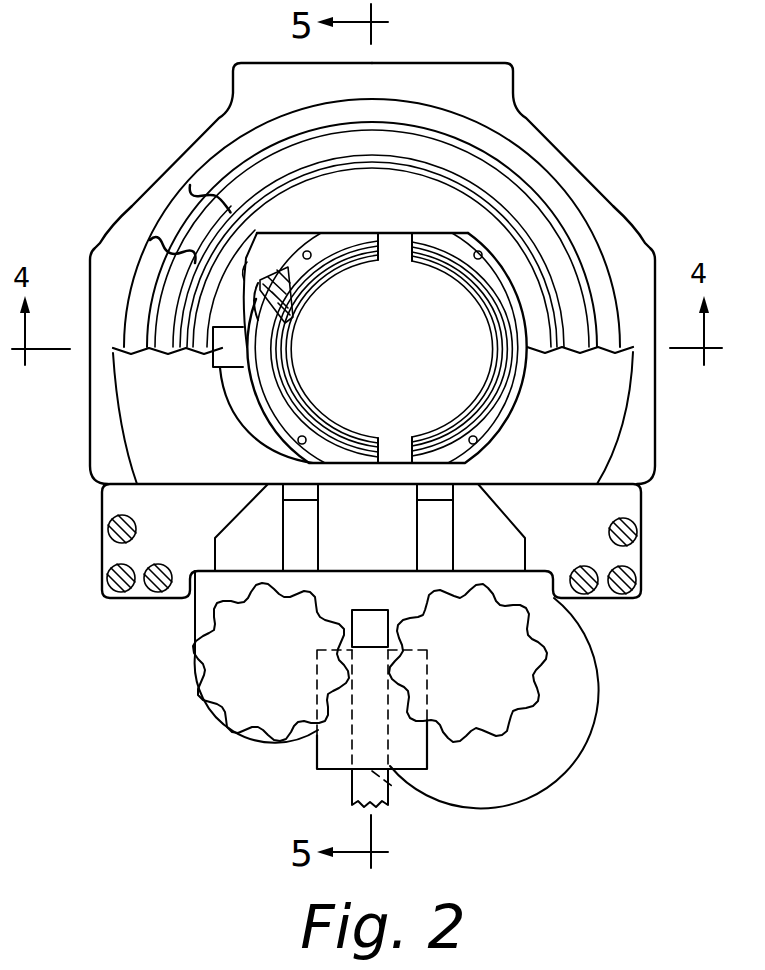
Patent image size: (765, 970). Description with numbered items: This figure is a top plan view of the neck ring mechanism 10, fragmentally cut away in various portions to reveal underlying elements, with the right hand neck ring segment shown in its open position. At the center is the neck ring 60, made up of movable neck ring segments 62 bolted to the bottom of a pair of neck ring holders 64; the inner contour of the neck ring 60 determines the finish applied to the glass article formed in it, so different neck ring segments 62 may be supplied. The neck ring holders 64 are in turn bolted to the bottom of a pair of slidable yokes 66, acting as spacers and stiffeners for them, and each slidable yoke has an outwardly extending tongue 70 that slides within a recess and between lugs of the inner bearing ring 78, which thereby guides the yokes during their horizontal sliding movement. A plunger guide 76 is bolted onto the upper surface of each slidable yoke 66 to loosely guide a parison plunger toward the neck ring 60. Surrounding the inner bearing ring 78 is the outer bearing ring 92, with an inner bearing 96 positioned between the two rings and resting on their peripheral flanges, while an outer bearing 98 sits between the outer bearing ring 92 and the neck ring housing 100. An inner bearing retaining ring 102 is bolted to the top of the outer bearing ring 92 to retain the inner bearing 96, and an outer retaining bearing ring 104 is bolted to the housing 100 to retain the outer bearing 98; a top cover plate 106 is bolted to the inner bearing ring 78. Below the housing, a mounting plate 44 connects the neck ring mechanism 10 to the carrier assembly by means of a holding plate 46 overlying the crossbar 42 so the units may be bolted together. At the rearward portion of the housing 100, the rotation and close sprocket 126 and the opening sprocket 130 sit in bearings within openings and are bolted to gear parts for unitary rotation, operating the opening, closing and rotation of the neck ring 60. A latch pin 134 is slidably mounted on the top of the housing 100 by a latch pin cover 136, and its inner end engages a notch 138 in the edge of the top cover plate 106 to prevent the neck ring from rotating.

The neck ring mechanism 10 is at (620, 189).
The crossbar 42 is at (432, 537).
The mounting plate 44 is at (394, 541).
The holding plate 46 is at (337, 497).
The neck ring 60 is at (432, 420).
The neck ring segments 62 is at (293, 380).
The neck ring holders 64 is at (297, 317).
The slidable yokes 66 is at (266, 297).
The tongue 70 is at (225, 343).
The plunger guide 76 is at (297, 288).
The inner bearing ring 78 is at (400, 221).
The outer bearing ring 92 is at (203, 240).
The inner bearing 96 is at (275, 280).
The outer bearing 98 is at (193, 195).
The neck ring housing 100 is at (197, 157).
The inner bearing retaining ring 102 is at (290, 162).
The outer retaining bearing ring 104 is at (325, 113).
The top cover plate 106 is at (210, 449).
The rotation and close sprocket 126 is at (507, 655).
The opening sprocket 130 is at (227, 662).
The latch pin 134 is at (372, 633).
The latch pin cover 136 is at (327, 750).
The notch 138 is at (370, 610).